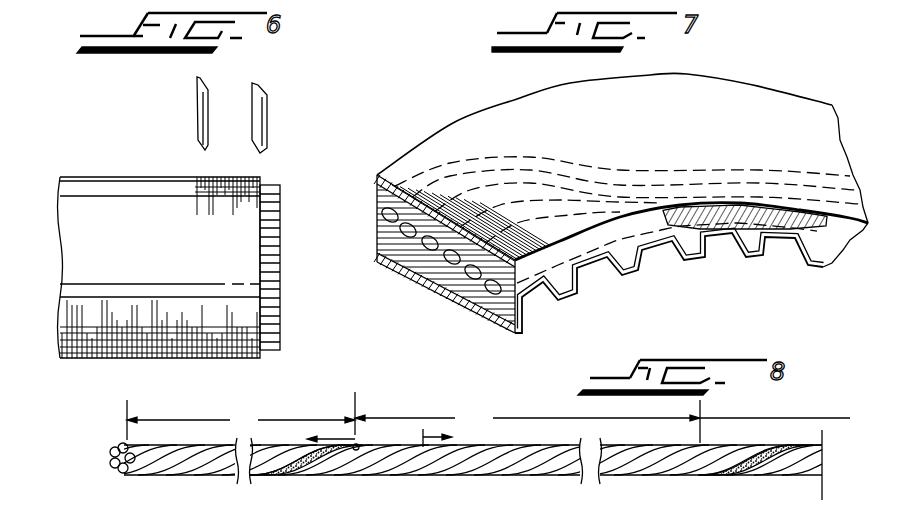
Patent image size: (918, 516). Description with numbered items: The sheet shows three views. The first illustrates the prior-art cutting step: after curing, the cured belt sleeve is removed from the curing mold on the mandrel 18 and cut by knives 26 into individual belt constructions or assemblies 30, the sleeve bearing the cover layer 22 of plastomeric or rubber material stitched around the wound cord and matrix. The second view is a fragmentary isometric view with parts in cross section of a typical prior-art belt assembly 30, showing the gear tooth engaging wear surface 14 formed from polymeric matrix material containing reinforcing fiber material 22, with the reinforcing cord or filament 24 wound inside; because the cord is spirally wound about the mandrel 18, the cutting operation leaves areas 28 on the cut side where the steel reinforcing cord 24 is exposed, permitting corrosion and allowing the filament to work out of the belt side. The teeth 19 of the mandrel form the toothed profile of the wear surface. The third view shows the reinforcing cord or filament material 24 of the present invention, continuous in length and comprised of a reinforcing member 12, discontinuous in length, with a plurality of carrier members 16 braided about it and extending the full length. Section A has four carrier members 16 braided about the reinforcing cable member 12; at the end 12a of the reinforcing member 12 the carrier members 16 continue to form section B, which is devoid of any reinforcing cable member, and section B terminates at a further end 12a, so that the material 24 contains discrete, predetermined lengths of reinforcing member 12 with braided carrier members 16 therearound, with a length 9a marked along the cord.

In FIG. 6, the knives 26 is at (199, 124).
In FIG. 6, the cover layer 22 is at (163, 232).
In FIG. 7, the cover layer 22 is at (378, 177).
In FIG. 6, the mandrel 18 is at (281, 223).
In FIG. 7, the belt assembly 30 is at (455, 123).
In FIG. 7, the reinforcing cord or filament material 24 is at (380, 223).
In FIG. 8, the reinforcing cord or filament material 24 is at (402, 478).
In FIG. 7, the gear tooth engaging wear surface 14 is at (390, 257).
In FIG. 7, the exposed reinforcing cord areas 28 is at (777, 226).
In FIG. 8, the reinforcing member 12 is at (305, 473).
In FIG. 8, the end of reinforcing member 12a is at (357, 447).
In FIG. 8, the carrier members 16 is at (220, 472).
In FIG. 8, the teeth 19 is at (241, 417).
In FIG. 8, the strand length segment 9a is at (602, 423).